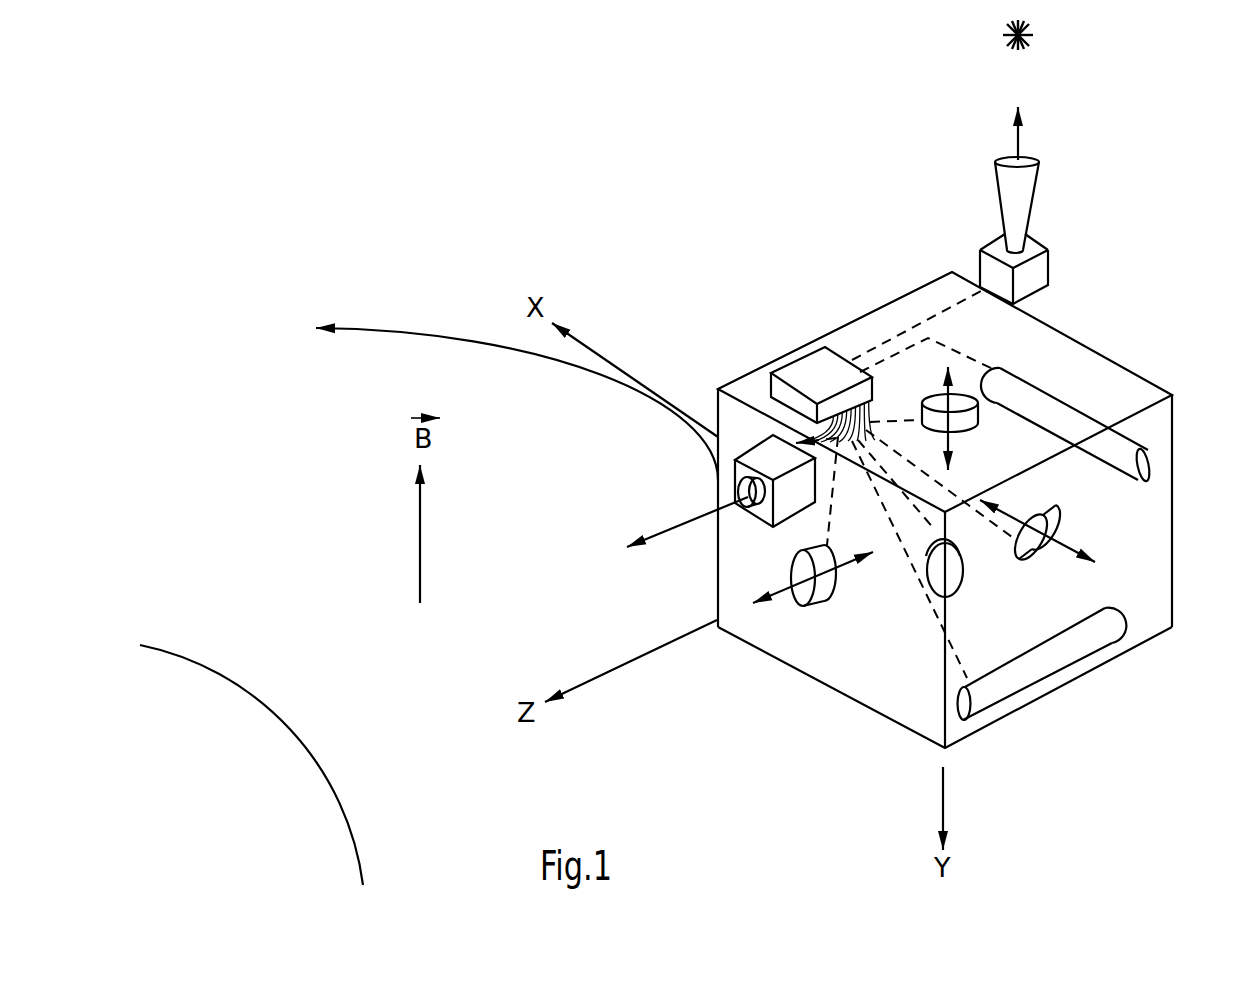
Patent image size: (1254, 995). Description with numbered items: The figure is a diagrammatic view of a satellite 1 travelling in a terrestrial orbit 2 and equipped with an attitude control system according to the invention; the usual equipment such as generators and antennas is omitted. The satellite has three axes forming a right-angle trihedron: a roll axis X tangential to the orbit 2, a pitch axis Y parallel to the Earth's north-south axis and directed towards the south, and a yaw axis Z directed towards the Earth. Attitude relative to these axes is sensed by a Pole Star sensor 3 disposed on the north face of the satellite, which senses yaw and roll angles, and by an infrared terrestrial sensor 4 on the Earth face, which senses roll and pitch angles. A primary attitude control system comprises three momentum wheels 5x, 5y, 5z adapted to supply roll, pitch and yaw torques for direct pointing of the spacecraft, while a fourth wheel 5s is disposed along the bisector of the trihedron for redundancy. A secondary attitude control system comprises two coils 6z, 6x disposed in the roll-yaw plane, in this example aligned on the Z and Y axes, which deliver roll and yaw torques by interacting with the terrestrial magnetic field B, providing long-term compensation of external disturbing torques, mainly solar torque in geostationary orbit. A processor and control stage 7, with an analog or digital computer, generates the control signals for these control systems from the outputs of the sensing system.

The satellite 1 is at (868, 311).
The terrestrial orbit 2 is at (372, 327).
The Pole Star sensor 3 is at (1040, 240).
The infrared terrestrial sensor 4 is at (780, 527).
The momentum wheel 5x is at (1065, 512).
The momentum wheel 5y is at (978, 430).
The momentum wheel 5z is at (828, 610).
The fourth wheel 5s is at (963, 577).
The coil 6x is at (1140, 442).
The coil 6z is at (1112, 617).
The processor and control stage 7 is at (798, 358).